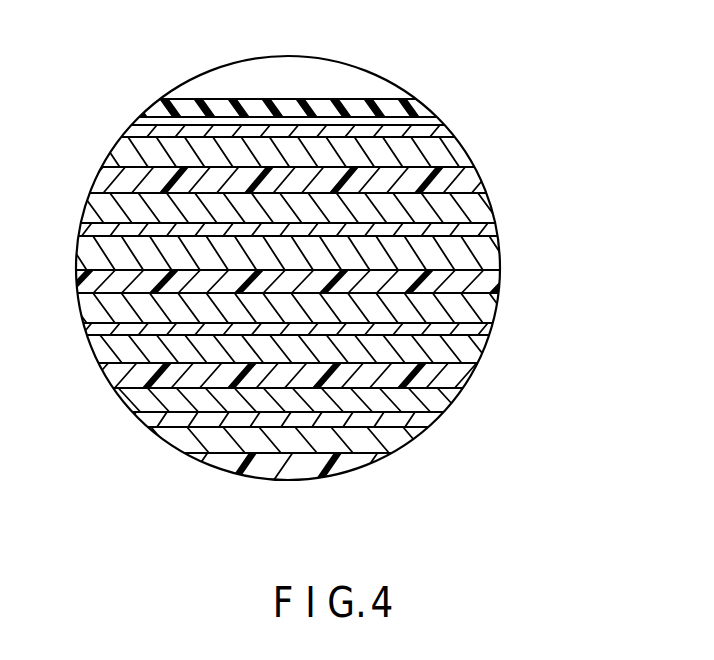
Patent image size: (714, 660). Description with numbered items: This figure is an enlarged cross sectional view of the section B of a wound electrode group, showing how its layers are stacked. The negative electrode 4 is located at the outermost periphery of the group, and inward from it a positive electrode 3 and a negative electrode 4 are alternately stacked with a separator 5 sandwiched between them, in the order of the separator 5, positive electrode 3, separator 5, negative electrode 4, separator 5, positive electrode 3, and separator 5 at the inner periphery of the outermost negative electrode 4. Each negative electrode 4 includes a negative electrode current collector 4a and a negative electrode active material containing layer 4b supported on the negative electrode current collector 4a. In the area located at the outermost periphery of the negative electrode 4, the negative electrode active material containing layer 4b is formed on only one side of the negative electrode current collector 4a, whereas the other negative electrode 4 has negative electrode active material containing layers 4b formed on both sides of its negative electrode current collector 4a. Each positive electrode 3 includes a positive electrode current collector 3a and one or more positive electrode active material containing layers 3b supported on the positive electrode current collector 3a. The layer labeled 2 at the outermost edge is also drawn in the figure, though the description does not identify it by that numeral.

The section B is at (190, 92).
The outer layer 2 is at (417, 108).
The positive electrode 3 is at (573, 162).
The positive electrode current collector 3a is at (483, 232).
The positive electrode active material containing layer 3b is at (470, 197).
The negative electrode 4 is at (542, 76).
The negative electrode current collector 4a is at (440, 129).
The negative electrode active material containing layer 4b is at (438, 152).
The separator 5 is at (108, 178).